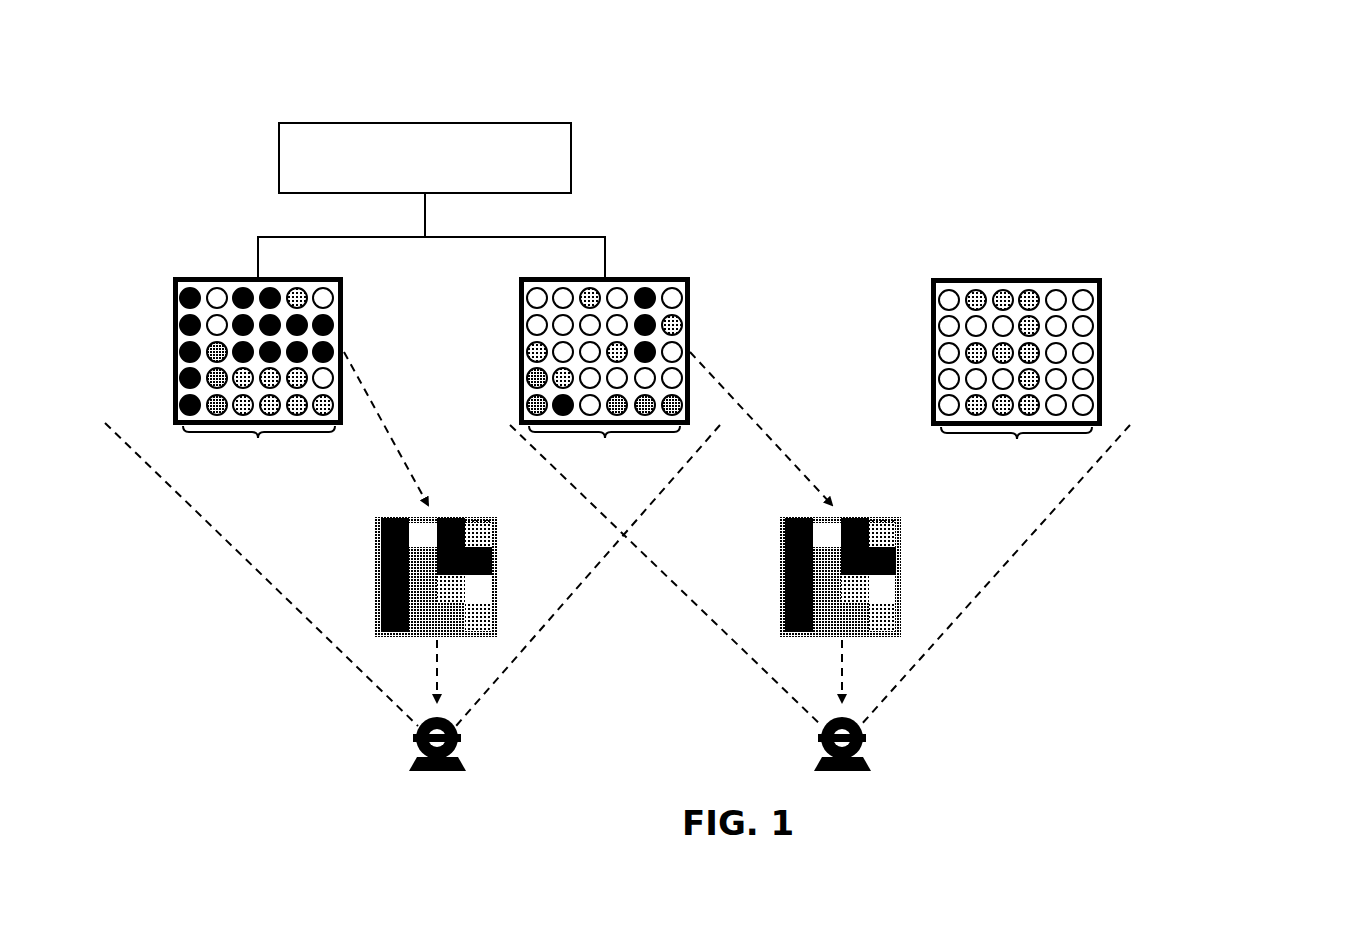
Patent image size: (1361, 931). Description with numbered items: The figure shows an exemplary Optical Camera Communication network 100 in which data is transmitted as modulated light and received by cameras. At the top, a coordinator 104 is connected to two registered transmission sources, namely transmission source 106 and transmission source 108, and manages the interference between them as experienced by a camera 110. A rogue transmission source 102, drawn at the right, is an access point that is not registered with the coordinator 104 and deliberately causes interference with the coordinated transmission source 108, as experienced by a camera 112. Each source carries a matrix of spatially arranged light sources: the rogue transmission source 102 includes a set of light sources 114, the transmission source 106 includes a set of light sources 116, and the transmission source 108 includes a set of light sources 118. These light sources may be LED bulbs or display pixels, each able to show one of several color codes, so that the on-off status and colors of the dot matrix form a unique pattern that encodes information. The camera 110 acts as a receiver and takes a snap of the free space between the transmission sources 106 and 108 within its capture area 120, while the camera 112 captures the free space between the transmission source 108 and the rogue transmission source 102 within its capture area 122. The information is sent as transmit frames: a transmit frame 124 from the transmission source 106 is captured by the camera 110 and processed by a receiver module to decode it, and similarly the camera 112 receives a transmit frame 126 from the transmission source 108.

The Optical Camera Communication network 100 is at (1205, 80).
The rogue transmission source 102 is at (1103, 352).
The coordinator 104 is at (431, 200).
The transmission source 106 is at (345, 300).
The transmission source 108 is at (690, 300).
The camera 110 is at (465, 762).
The camera 112 is at (870, 762).
The set of light sources 114 is at (1016, 450).
The set of light sources 116 is at (259, 449).
The set of light sources 118 is at (604, 449).
The capture area 120 is at (190, 512).
The capture area 122 is at (680, 597).
The transmit frame 124 is at (375, 540).
The transmit frame 126 is at (870, 517).